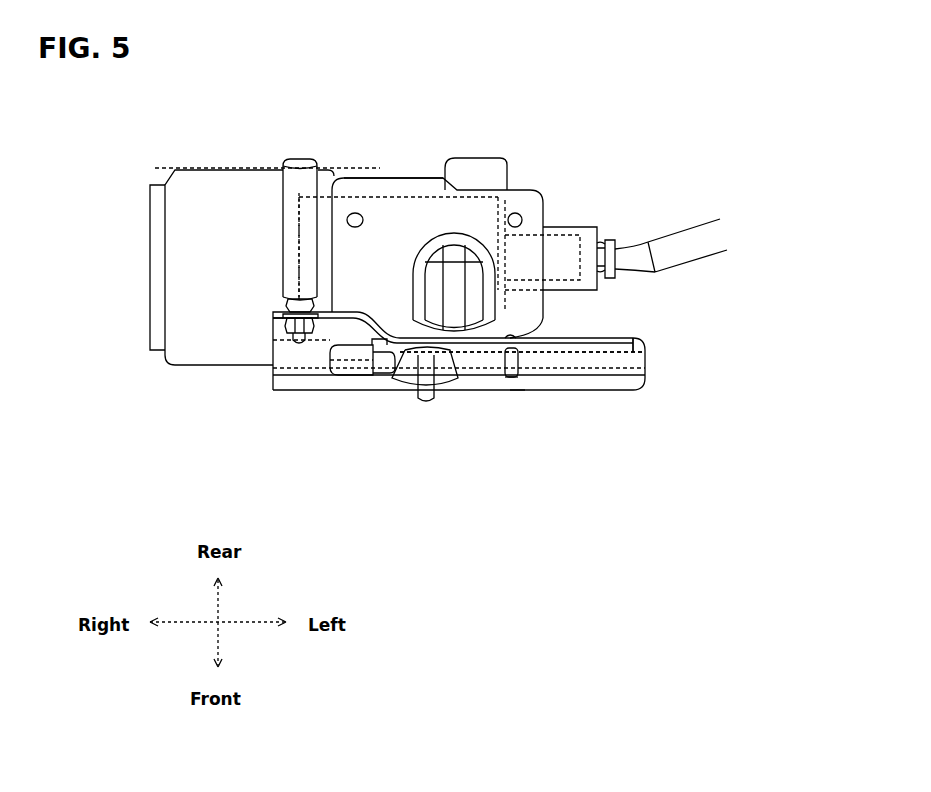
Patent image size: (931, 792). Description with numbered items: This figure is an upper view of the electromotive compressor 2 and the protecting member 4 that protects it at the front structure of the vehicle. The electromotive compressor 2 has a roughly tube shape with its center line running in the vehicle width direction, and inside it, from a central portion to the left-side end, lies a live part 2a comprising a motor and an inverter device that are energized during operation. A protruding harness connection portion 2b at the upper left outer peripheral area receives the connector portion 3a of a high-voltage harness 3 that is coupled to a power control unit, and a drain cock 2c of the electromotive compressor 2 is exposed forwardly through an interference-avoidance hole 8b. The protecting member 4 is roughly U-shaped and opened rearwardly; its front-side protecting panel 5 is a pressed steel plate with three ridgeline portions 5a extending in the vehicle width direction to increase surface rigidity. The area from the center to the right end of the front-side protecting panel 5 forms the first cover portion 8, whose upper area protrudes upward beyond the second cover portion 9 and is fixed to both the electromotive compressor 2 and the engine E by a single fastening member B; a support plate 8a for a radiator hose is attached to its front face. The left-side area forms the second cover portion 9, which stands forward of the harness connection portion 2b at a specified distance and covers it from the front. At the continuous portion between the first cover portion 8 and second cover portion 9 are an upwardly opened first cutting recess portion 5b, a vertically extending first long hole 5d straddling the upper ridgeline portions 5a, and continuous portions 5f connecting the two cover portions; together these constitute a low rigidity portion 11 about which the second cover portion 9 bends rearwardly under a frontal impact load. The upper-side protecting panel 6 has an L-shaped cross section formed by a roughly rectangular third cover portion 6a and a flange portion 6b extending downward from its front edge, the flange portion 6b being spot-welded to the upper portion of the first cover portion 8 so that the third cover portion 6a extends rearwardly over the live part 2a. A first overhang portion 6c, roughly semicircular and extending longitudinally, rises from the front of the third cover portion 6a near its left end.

The engine E is at (213, 183).
The electromotive compressor 2 is at (202, 365).
The live part 2a is at (397, 195).
The harness connection portion 2b is at (565, 235).
The drain cock 2c is at (428, 400).
The fastening member B is at (287, 331).
The upper-side protecting panel 6 is at (426, 178).
The third cover portion 6a is at (373, 190).
The flange portion 6b is at (530, 338).
The first overhang portion 6c is at (432, 277).
The high-voltage harness 3 is at (697, 262).
The connector portion 3a is at (620, 240).
The front-side protecting panel 5 is at (588, 392).
The ridgeline portions 5a is at (627, 337).
The first cutting recess portion 5b is at (515, 338).
The first long hole 5d is at (510, 372).
The continuous portions 5f is at (512, 383).
The second cover portion 9 is at (634, 362).
The low rigidity portion 11 is at (517, 396).
The first cover portion 8 is at (287, 388).
The support plate 8a is at (345, 375).
The interference-avoidance hole 8b is at (410, 387).
The protecting member 4 is at (303, 399).